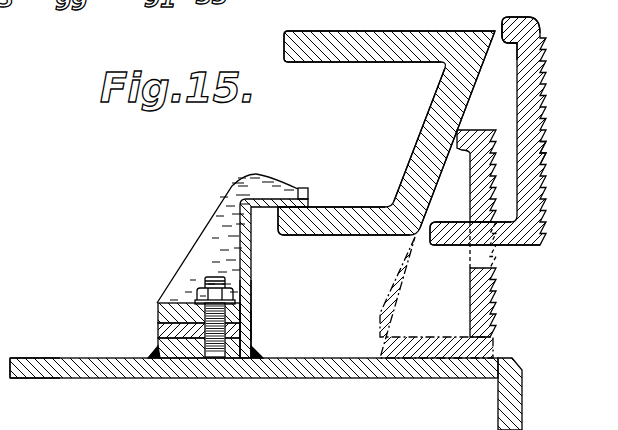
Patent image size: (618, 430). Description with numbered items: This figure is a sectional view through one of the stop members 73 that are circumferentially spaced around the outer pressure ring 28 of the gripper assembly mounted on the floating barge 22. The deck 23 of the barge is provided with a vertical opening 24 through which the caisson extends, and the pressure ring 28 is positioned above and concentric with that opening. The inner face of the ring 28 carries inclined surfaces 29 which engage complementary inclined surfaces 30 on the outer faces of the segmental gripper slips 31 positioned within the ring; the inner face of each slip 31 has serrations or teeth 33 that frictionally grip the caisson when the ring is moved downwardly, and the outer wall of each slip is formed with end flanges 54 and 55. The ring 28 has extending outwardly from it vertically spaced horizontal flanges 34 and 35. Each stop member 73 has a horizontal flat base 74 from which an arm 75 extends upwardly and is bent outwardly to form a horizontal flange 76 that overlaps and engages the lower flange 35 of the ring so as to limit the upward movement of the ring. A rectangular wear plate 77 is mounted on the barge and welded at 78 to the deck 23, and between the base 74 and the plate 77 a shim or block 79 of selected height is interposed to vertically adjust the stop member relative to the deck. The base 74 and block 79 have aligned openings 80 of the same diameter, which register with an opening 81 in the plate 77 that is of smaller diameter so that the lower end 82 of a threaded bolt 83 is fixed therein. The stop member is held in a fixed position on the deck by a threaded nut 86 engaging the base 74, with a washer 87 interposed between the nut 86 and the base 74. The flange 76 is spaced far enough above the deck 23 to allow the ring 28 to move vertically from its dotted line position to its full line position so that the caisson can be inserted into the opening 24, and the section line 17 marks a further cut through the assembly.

The section line 17- 17 is at (147, 338).
The floating barge 22 is at (391, 384).
The deck 23 is at (32, 363).
The vertical opening 24 is at (522, 417).
The outer pressure ring 28 is at (416, 27).
The inclined surfaces 29 is at (462, 115).
The inclined surfaces 30 is at (505, 23).
The segmental gripper slips 31 is at (537, 110).
The serrations or teeth 33 is at (541, 170).
The upper horizontal flange 34 is at (364, 31).
The lower horizontal flange 35 is at (338, 227).
The upper end flange 54 is at (508, 40).
The lower end flange 55 is at (517, 247).
The stop member 73 is at (214, 236).
The horizontal flat base 74 is at (251, 302).
The arm 75 is at (251, 250).
The horizontal flange 76 is at (302, 188).
The rectangular wear plate 77 is at (182, 347).
The weld 78 is at (143, 348).
The shim or block 79 is at (158, 330).
The aligned openings 80 is at (248, 325).
The opening 81 is at (236, 356).
The lower end of bolt 82 is at (215, 344).
The threaded bolt 83 is at (211, 278).
The threaded nut 86 is at (205, 291).
The washer 87 is at (200, 301).